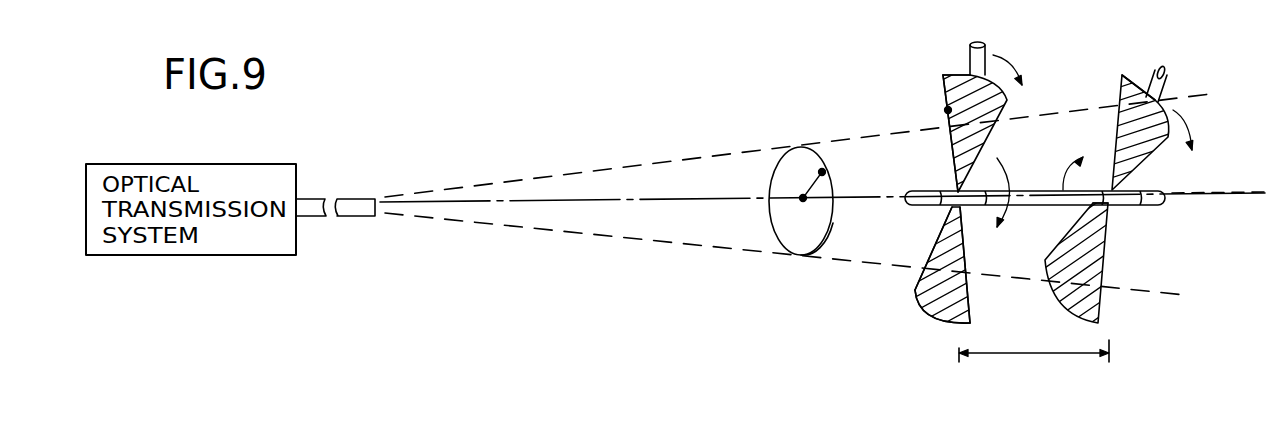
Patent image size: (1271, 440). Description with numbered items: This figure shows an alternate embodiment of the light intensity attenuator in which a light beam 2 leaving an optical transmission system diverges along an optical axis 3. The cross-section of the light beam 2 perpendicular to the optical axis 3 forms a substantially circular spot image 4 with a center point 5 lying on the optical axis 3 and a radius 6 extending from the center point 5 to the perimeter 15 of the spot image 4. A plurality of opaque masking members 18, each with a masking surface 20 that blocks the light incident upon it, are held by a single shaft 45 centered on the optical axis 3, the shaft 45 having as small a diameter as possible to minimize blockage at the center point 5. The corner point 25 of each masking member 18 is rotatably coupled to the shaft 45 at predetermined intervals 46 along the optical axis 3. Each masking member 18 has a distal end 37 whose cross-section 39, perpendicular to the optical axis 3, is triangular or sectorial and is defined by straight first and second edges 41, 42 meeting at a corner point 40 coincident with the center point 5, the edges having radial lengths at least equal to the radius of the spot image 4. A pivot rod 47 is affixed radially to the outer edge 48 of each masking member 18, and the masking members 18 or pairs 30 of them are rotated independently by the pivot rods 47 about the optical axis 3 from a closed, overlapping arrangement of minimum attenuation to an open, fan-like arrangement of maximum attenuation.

The light beam 2 is at (655, 160).
The optical axis 3 is at (575, 200).
The spot image 4 is at (772, 162).
The center point 5 is at (803, 198).
The radius 6 is at (821, 172).
The perimeter 15 is at (833, 224).
The masking member 18 is at (945, 90).
The masking surface 20 is at (948, 110).
The corner point 25 is at (952, 178).
The pair of masking members 30 is at (1177, 212).
The distal end 37 is at (940, 318).
The cross-section 39 is at (952, 298).
The corner point 40 is at (947, 210).
The first edge 41 is at (920, 275).
The second edge 42 is at (973, 290).
The shaft 45 is at (1033, 192).
The predetermined intervals 46 is at (1034, 365).
The pivot rod 47 is at (967, 53).
The outer edge 48 is at (952, 73).